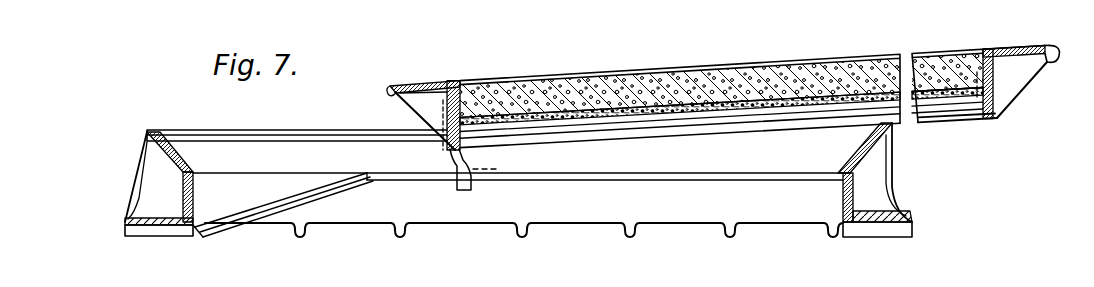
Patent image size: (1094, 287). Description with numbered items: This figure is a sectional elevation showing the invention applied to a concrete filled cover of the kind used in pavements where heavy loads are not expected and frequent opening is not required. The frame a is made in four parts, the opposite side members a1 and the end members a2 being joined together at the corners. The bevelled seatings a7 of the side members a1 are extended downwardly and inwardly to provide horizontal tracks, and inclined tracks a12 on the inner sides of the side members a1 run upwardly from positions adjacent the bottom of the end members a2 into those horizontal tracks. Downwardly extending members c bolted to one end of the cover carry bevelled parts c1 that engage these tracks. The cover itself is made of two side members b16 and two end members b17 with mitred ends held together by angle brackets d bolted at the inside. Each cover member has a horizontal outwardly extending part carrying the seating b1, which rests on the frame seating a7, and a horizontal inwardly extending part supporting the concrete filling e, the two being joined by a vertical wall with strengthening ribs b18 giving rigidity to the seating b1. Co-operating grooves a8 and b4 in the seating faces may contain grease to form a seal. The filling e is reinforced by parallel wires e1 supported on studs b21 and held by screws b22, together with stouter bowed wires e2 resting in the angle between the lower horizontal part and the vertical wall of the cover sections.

The frame a is at (552, 180).
The side member of frame a1 is at (477, 217).
The end member of frame a2 is at (178, 203).
The seating a7 is at (176, 138).
The groove a8 is at (223, 134).
The inclined track a12 is at (235, 215).
The seating b1 is at (392, 93).
The groove b4 is at (390, 86).
The side member of cover b16 is at (926, 119).
The end member of cover b17 is at (420, 84).
The strengthening rib b18 is at (1024, 84).
The stud b21 is at (965, 101).
The screw b22 is at (960, 90).
The downwardly extending member c is at (453, 162).
The bevelled part c1 is at (500, 162).
The angle bracket d is at (458, 80).
The concrete filling e is at (607, 75).
The reinforcing wire e1 is at (803, 107).
The stouter wire e2 is at (723, 112).